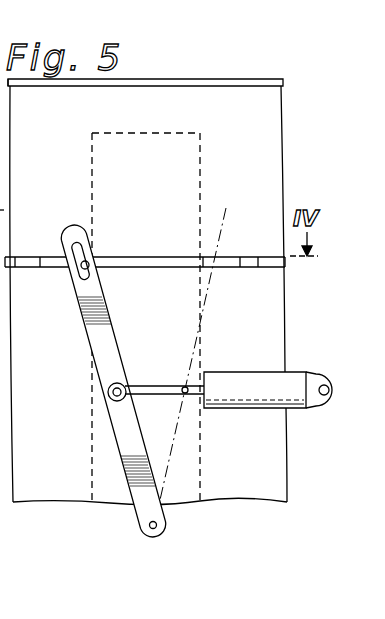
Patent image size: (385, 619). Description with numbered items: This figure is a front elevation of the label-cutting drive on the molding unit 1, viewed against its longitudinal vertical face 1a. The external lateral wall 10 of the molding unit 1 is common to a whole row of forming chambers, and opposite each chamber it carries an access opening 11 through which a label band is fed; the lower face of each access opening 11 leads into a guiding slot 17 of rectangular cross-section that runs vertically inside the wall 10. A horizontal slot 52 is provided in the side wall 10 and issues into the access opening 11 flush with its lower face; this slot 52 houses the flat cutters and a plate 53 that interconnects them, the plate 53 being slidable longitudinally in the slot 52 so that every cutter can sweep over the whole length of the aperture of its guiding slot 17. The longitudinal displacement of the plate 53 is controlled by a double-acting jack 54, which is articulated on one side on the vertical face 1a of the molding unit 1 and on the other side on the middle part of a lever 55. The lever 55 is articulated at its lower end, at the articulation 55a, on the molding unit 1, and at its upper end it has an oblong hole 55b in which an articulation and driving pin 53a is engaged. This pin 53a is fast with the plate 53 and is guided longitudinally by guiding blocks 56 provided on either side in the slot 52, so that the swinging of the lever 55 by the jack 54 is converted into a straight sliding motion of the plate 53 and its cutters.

The molding unit 1 is at (240, 110).
The longitudinal vertical face 1a is at (35, 294).
The external lateral wall 10 is at (257, 294).
The access opening 11 is at (143, 152).
The guiding slot 17 is at (182, 483).
The horizontal slot 52 is at (229, 255).
The plate 53 is at (178, 268).
The articulation and driving pin 53a is at (90, 262).
The double-acting jack 54 is at (247, 380).
The lever 55 is at (137, 447).
The lower end articulation 55a is at (146, 532).
The oblong hole 55b is at (84, 245).
The guiding blocks 56 is at (28, 262).